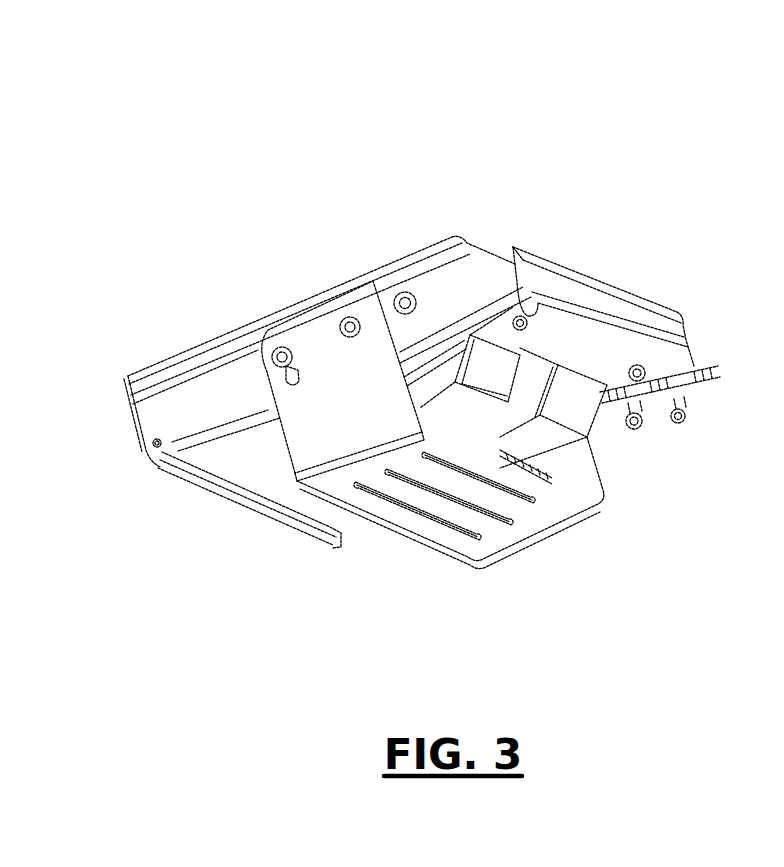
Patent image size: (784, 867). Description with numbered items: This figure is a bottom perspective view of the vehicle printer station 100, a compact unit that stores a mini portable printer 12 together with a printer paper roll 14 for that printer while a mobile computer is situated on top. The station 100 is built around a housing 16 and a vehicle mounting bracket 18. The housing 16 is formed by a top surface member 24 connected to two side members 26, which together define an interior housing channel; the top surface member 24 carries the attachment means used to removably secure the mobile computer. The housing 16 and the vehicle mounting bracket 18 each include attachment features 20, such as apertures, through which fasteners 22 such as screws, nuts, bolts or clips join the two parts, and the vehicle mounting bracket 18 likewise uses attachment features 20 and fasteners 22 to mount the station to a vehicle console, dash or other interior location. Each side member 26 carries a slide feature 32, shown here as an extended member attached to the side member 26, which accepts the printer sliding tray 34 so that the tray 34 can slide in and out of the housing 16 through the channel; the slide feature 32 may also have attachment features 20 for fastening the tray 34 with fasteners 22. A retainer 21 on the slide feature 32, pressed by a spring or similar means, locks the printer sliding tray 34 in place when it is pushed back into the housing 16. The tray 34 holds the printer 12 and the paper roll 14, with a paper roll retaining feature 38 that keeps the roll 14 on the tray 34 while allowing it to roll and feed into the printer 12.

The vehicle printer station 100 is at (375, 96).
The mini portable printer 12 is at (635, 300).
The printer paper roll 14 is at (430, 368).
The housing 16 is at (448, 252).
The vehicle mounting bracket 18 is at (537, 519).
The attachment features 20 is at (288, 377).
The retainer 21 is at (682, 384).
The fasteners 22 is at (294, 362).
The top surface member 24 is at (490, 250).
The side members 26 is at (156, 406).
The slide feature 32 is at (526, 308).
The printer sliding tray 34 is at (222, 472).
The paper roll retaining feature 38 is at (582, 405).